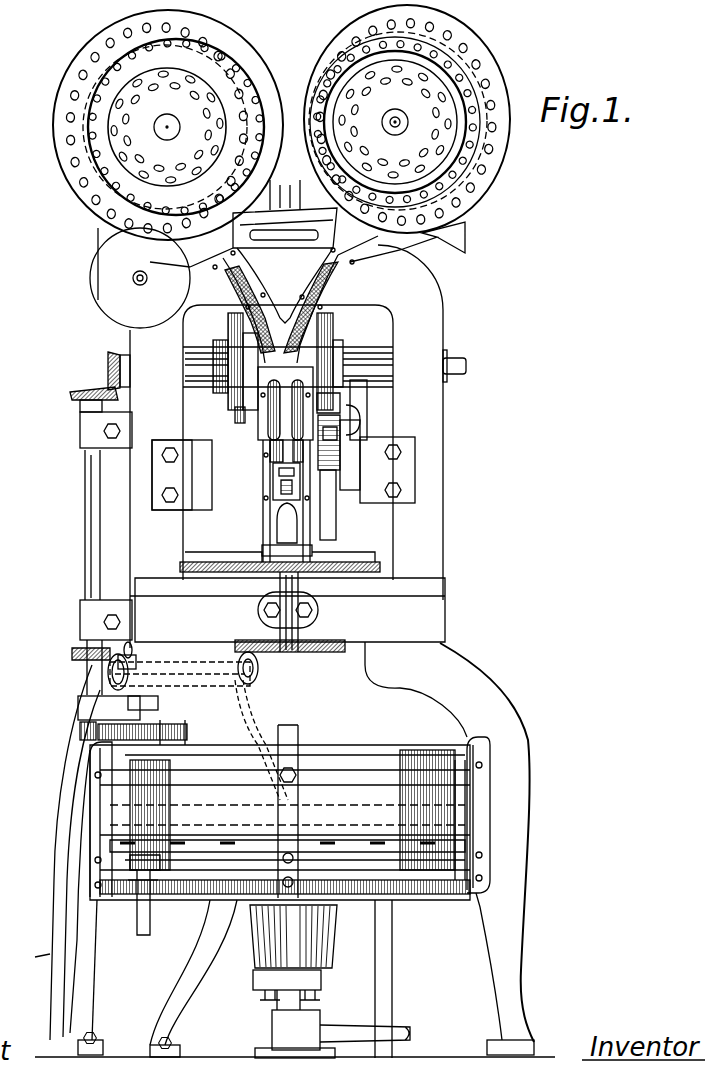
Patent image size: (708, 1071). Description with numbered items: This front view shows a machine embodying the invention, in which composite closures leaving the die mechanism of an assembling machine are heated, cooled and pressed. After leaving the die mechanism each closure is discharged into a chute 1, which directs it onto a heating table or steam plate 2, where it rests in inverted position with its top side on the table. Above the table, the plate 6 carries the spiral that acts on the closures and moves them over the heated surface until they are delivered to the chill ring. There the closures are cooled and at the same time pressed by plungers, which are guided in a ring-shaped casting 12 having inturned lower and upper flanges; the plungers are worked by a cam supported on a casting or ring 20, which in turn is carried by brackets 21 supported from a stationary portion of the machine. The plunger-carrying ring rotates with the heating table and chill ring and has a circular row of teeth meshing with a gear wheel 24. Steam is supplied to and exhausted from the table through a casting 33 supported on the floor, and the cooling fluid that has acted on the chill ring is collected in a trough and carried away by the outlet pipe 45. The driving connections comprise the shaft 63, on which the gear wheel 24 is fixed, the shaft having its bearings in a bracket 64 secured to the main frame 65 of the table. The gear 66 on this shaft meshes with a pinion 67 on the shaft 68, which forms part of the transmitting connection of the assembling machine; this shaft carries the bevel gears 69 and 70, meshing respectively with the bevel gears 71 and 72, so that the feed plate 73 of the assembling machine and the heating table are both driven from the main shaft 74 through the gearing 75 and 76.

The chute 1 is at (250, 713).
The heating table or steam plate 2 is at (330, 830).
The plate 6 is at (372, 838).
The ring-shaped casting 12 is at (470, 800).
The casting or ring 20 is at (393, 758).
The brackets 21 is at (95, 757).
The gear wheel 24 is at (130, 800).
The casting 33 is at (280, 1027).
The outlet pipe 45 is at (385, 952).
The shaft 63 is at (143, 697).
The bracket 64 is at (182, 742).
The main frame 65 is at (268, 612).
The gear 66 is at (172, 740).
The pinion 67 is at (80, 731).
The shaft 68 is at (92, 672).
The bevel gear 69 is at (72, 392).
The bevel gear 70 is at (76, 653).
The bevel gear 71 is at (108, 363).
The bevel gear 72 is at (130, 652).
The feed plate 73 is at (215, 563).
The main shaft 74 is at (453, 357).
The gearing 75 is at (256, 674).
The gearing 76 is at (291, 665).